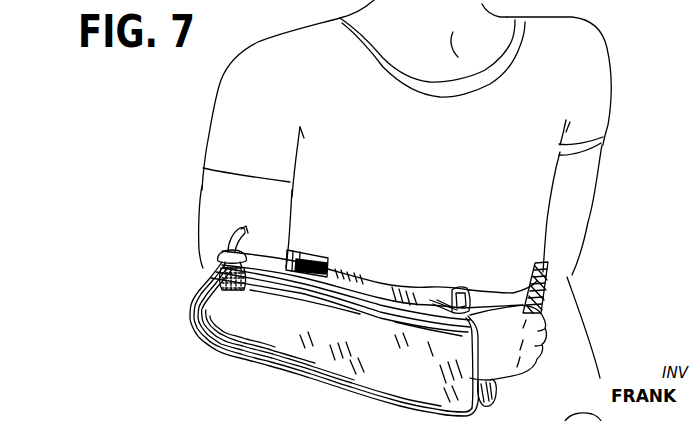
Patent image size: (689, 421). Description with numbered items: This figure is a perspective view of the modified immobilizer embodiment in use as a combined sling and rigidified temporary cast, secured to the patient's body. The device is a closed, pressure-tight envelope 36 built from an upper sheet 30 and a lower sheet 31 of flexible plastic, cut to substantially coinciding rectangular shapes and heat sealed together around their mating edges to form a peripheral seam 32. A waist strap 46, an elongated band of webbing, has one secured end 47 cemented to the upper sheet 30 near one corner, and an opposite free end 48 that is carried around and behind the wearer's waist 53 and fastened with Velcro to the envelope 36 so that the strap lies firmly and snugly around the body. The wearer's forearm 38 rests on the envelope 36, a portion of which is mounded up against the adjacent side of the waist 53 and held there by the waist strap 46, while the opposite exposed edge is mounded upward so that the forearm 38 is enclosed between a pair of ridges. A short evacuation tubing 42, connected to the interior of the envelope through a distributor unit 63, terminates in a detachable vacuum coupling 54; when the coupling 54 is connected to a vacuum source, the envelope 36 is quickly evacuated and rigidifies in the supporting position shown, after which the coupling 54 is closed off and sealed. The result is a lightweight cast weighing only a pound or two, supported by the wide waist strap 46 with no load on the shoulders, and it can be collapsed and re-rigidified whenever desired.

The upper sheet 30 is at (387, 295).
The lower sheet 31 is at (192, 297).
The peripheral seam 32 is at (391, 290).
The envelope 36 is at (272, 336).
The wearer's forearm 38 is at (338, 287).
The evacuation tubing 42 is at (226, 238).
The waist strap 46 is at (560, 279).
The secured end 47 is at (452, 307).
The free end 48 is at (320, 262).
The waist 53 is at (520, 235).
The vacuum coupling 54 is at (238, 234).
The distributor unit 63 is at (207, 272).